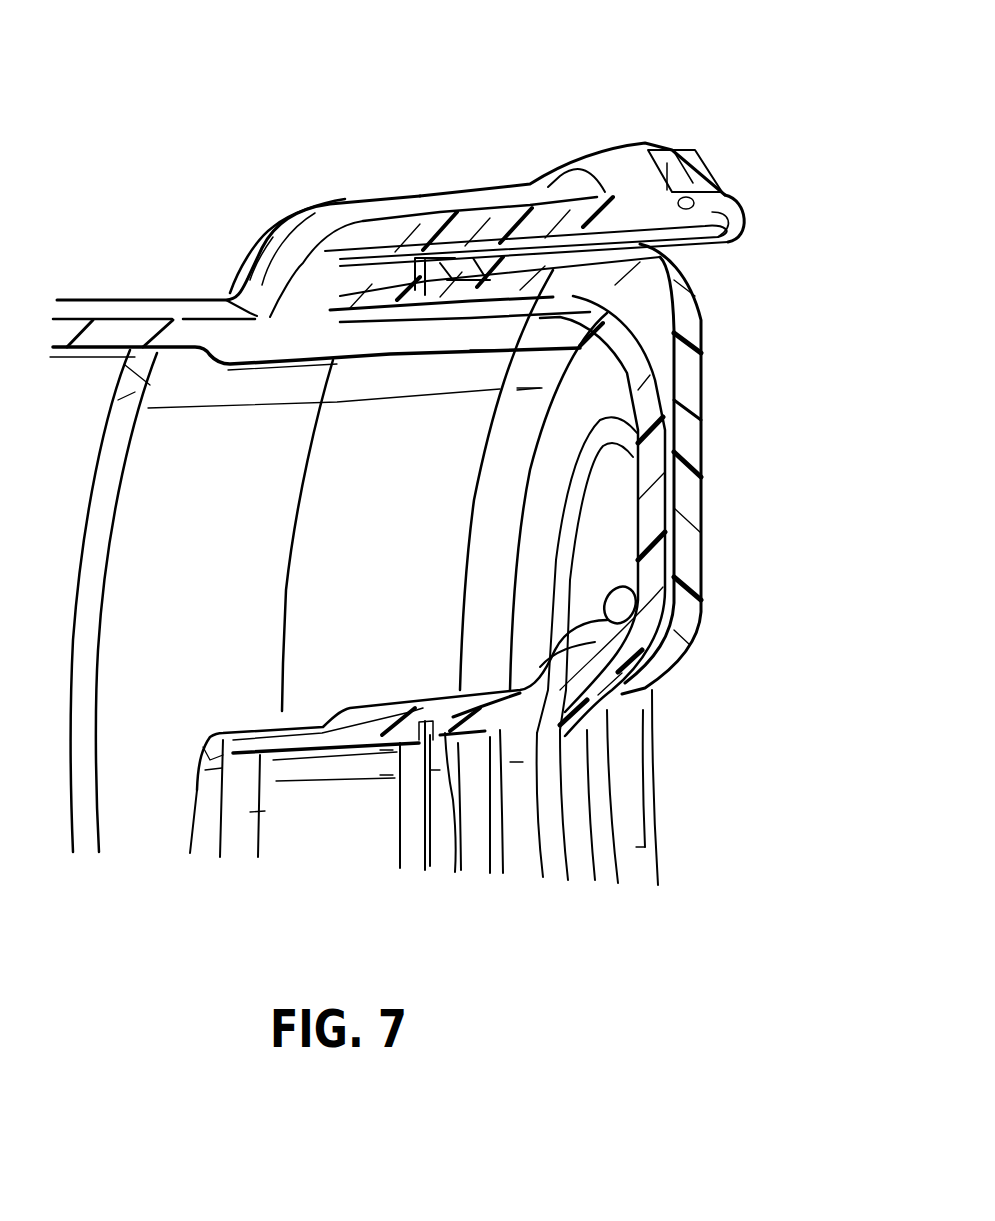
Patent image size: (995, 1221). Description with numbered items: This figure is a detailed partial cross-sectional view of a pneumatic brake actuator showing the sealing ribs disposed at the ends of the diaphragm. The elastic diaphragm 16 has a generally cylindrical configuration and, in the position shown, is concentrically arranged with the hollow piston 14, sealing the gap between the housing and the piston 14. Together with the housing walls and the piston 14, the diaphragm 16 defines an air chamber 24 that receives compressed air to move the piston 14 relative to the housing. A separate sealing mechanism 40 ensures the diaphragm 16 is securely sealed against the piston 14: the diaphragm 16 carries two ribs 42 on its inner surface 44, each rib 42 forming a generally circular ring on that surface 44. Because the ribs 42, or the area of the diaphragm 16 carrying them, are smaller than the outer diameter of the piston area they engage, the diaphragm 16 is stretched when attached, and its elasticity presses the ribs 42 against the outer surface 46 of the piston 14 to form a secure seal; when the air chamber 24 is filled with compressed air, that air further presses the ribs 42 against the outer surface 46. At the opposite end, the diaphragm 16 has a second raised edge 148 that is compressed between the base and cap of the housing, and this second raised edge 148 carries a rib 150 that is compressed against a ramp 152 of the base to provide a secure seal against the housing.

The piston 14 is at (705, 328).
The diaphragm 16 is at (562, 176).
The air chamber 24 is at (355, 290).
The sealing mechanism 40 is at (452, 210).
The ribs 42 is at (425, 264).
The inner surface 44 is at (479, 278).
The outer surface 46 is at (508, 232).
The second raised edge 148 is at (678, 188).
The rib 150 is at (688, 198).
The ramp 152 is at (740, 182).